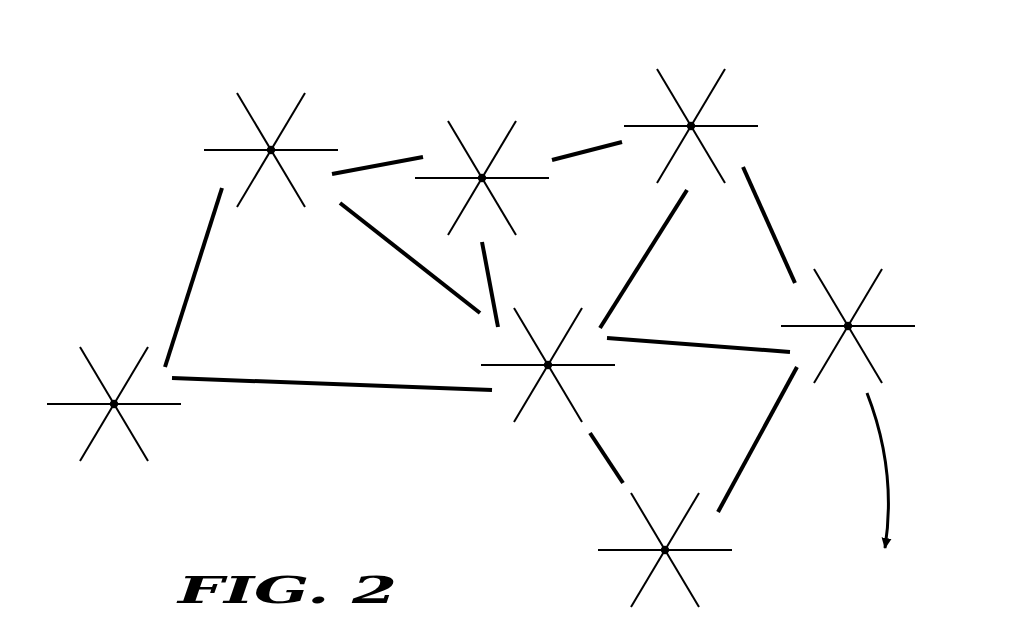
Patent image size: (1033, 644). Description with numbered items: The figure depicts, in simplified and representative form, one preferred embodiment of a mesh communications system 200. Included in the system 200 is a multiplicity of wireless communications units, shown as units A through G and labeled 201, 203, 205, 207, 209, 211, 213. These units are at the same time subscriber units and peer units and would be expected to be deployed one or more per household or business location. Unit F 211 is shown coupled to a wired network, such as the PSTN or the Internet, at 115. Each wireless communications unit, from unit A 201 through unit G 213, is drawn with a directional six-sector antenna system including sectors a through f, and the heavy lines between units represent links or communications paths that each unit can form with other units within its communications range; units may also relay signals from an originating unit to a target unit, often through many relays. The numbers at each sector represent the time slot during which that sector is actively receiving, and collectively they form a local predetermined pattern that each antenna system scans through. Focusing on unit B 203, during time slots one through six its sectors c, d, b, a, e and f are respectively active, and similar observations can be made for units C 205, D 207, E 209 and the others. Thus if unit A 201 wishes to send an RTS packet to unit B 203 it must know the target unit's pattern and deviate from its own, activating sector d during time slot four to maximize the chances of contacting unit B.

The mesh communications system 200 is at (481, 338).
The wireless communications unit A 201 is at (234, 154).
The wireless communications unit B 203 is at (500, 164).
The wireless communications unit C 205 is at (727, 128).
The wireless communications unit D 207 is at (517, 388).
The wireless communications unit E 209 is at (114, 393).
The wireless communications unit F 211 is at (851, 311).
The wireless communications unit G 213 is at (611, 554).
The wired network connection 115 is at (827, 502).